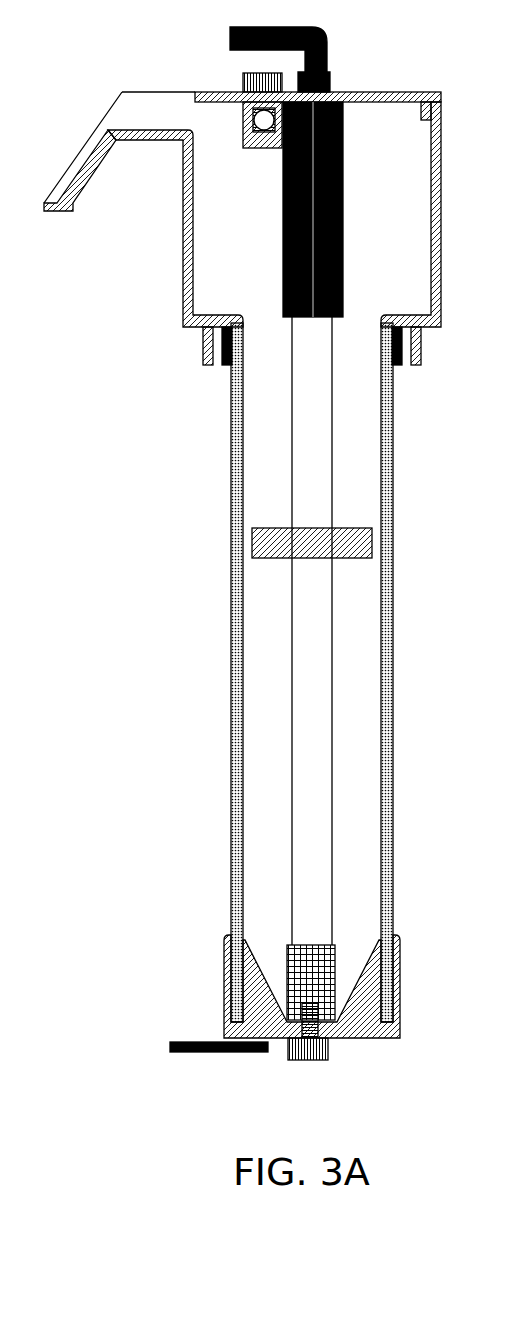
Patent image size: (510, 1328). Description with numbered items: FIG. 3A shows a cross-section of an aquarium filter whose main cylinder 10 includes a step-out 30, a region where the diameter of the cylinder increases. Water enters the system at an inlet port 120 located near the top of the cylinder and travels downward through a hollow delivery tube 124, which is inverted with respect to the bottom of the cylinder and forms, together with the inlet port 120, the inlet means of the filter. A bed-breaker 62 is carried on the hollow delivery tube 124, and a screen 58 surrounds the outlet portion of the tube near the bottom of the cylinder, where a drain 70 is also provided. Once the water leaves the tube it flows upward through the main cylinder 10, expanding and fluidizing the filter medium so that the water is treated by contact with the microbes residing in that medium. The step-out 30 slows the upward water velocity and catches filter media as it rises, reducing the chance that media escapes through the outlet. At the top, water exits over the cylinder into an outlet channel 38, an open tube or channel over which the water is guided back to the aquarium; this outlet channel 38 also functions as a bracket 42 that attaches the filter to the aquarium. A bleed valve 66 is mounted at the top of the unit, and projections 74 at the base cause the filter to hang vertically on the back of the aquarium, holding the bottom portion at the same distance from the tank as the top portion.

The main cylinder 10 is at (238, 834).
The step-out 30 is at (217, 275).
The outlet channel 38 is at (128, 101).
The bracket 42 is at (76, 183).
The screen 58 is at (318, 950).
The bed-breaker 62 is at (266, 550).
The bleed valve 66 is at (257, 72).
The drain 70 is at (300, 1033).
The projections 74 is at (193, 1042).
The inlet port 120 is at (328, 72).
The hollow delivery tube 124 is at (310, 723).